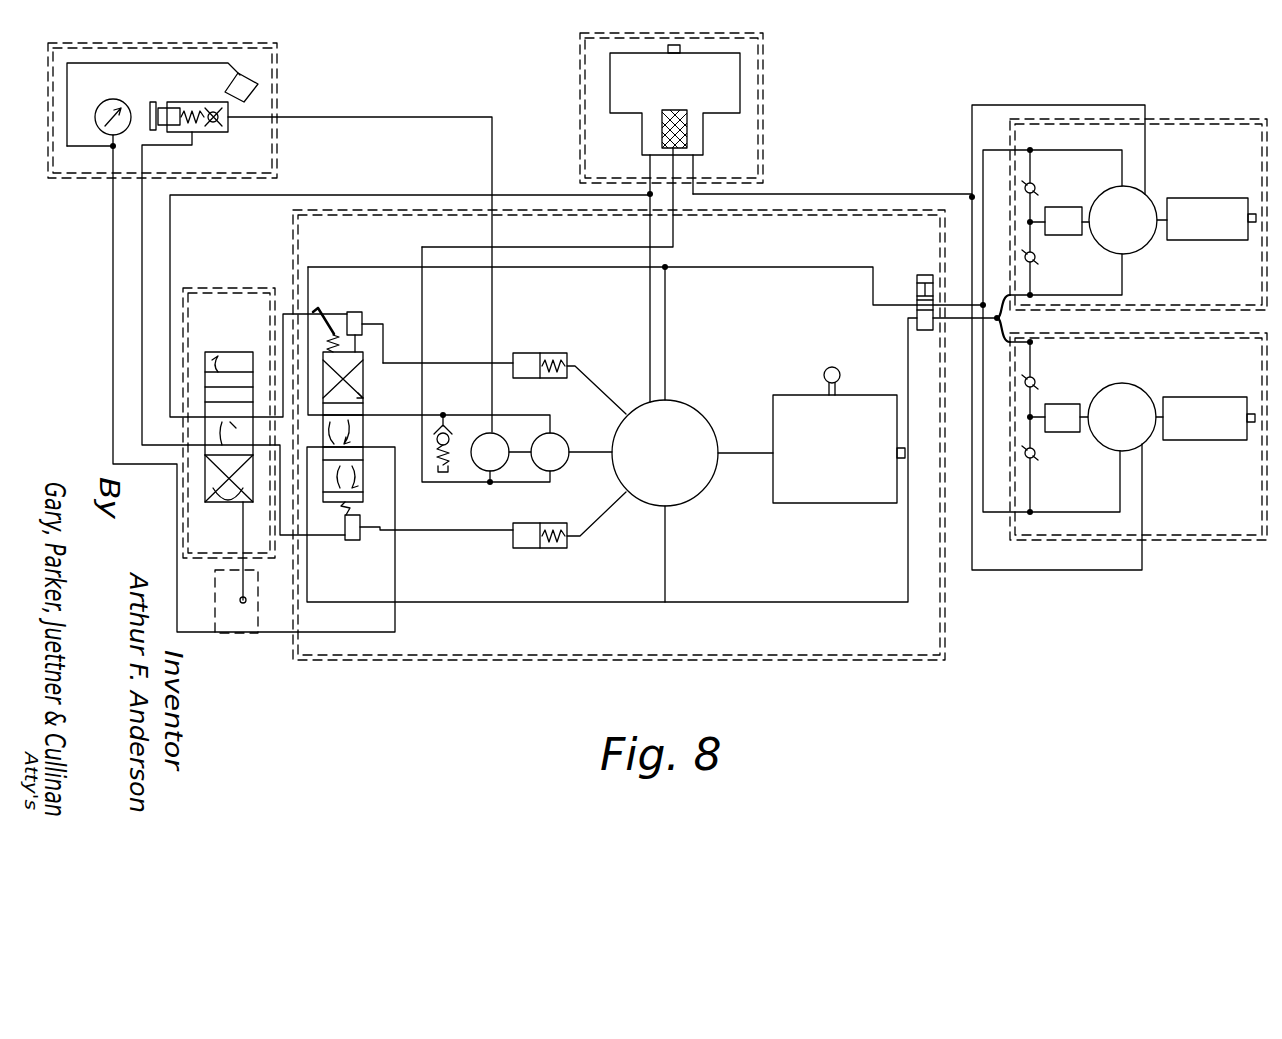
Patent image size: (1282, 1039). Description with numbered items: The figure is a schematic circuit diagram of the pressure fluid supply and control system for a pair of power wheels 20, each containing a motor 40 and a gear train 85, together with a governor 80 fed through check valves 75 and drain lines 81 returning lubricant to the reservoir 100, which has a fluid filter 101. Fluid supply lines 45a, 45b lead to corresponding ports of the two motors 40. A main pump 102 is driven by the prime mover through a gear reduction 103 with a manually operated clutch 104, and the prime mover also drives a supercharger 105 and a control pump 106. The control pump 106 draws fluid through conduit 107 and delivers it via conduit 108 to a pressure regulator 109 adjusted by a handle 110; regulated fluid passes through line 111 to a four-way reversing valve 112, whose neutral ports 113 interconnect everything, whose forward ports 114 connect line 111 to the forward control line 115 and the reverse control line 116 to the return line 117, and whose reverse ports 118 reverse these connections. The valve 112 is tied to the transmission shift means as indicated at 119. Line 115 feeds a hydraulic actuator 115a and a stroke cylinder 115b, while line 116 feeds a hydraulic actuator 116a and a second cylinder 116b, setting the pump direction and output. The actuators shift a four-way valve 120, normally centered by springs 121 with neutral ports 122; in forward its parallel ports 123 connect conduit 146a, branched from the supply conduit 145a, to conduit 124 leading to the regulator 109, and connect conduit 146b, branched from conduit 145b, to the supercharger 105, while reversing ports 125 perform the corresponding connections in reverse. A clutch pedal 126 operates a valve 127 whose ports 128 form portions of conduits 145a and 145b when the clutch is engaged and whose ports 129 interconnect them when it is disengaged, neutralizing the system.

The wheel 20 is at (1177, 120).
The motor 40 is at (1133, 240).
The fluid supply line 45a is at (1012, 320).
The fluid supply line 45b is at (983, 150).
The check valve 75 is at (1036, 184).
The governor 80 is at (1060, 235).
The drain line 81 is at (1146, 160).
The gear train 85 is at (1220, 230).
The reservoir 100 is at (732, 86).
The fluid filter 101 is at (688, 135).
The main pump 102 is at (688, 415).
The gear reduction 103 is at (808, 498).
The clutch 104 is at (838, 372).
The supercharger 105 is at (558, 468).
The control pump 106 is at (496, 467).
The conduit 107 is at (422, 335).
The conduit 108 is at (492, 312).
The pressure regulator 109 is at (218, 130).
The handle 110 is at (155, 104).
The line 111 is at (146, 290).
The four-way reversing valve 112 is at (235, 350).
The ports 113 is at (215, 428).
The parallel ports 114 is at (235, 365).
The forward control line 115 is at (323, 502).
The hydraulic actuator 115a is at (355, 542).
The stroke cylinder 115b is at (545, 550).
The reverse control line 116 is at (308, 310).
The hydraulic actuator 116a is at (363, 320).
The stroke adjusting cylinder 116b is at (550, 353).
The return line 117 is at (171, 261).
The ports 118 is at (229, 500).
The transmission shift connection 119 is at (258, 603).
The four-way valve 120 is at (363, 405).
The centering springs 121 is at (326, 312).
The interconnected ports 122 is at (363, 432).
The parallel ports 123 is at (357, 477).
The conduit 124 is at (113, 336).
The reversing ports 125 is at (355, 374).
The clutch pedal 126 is at (924, 274).
The valve 127 is at (915, 280).
The ports 128 is at (917, 319).
The ports 129 is at (917, 296).
The supply conduit 145a is at (680, 600).
The conduit 145b is at (690, 305).
The conduit 146a is at (478, 603).
The conduit 146b is at (556, 267).